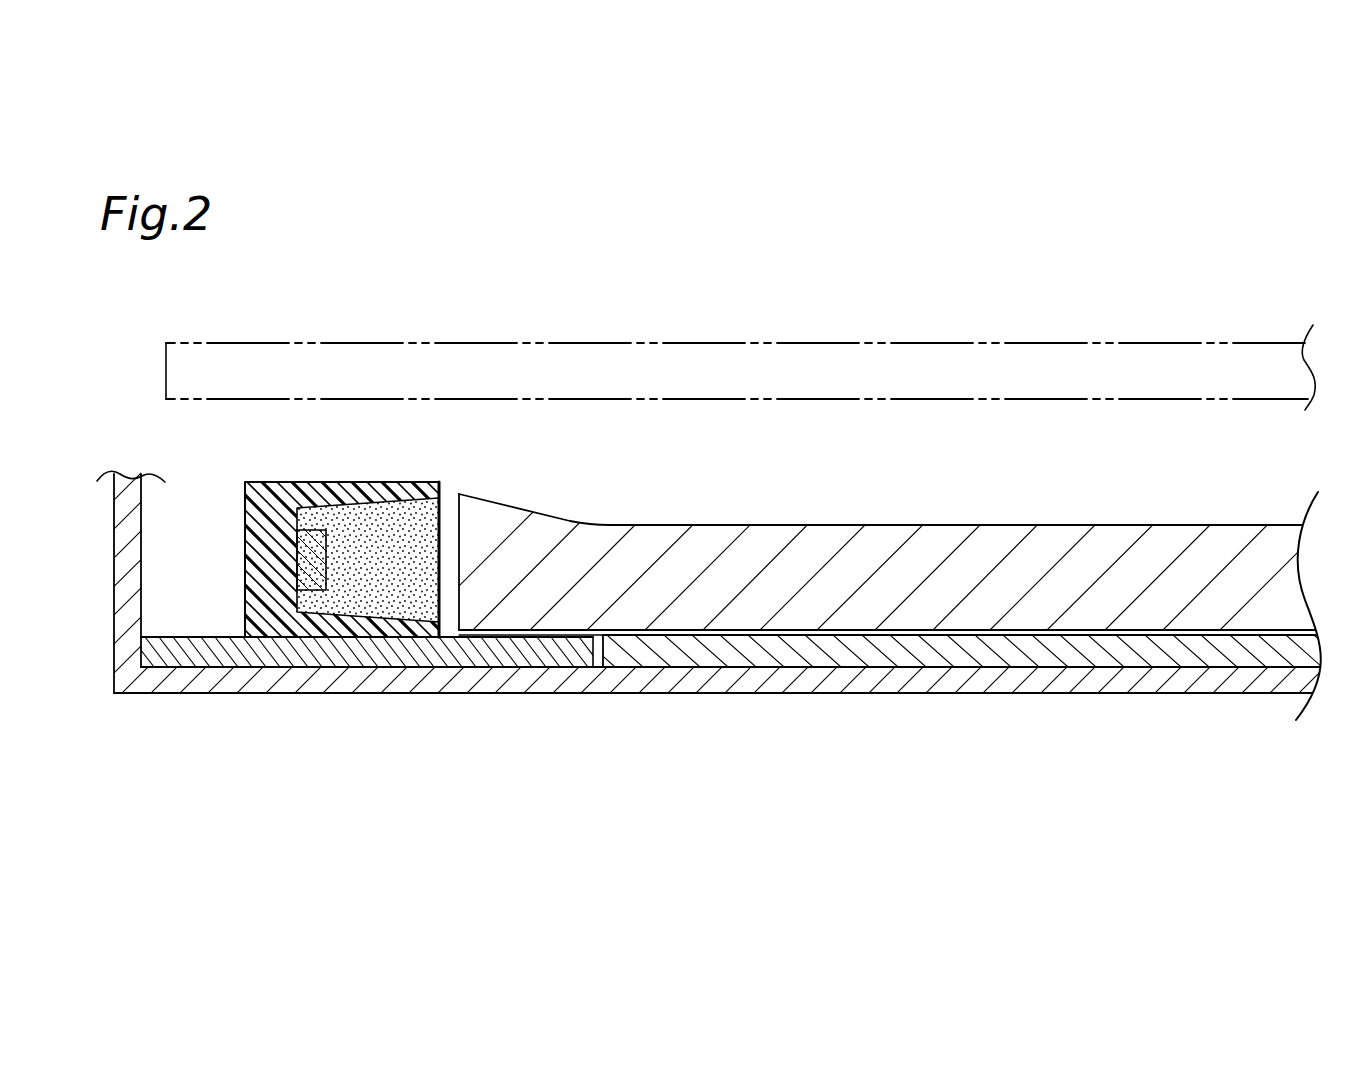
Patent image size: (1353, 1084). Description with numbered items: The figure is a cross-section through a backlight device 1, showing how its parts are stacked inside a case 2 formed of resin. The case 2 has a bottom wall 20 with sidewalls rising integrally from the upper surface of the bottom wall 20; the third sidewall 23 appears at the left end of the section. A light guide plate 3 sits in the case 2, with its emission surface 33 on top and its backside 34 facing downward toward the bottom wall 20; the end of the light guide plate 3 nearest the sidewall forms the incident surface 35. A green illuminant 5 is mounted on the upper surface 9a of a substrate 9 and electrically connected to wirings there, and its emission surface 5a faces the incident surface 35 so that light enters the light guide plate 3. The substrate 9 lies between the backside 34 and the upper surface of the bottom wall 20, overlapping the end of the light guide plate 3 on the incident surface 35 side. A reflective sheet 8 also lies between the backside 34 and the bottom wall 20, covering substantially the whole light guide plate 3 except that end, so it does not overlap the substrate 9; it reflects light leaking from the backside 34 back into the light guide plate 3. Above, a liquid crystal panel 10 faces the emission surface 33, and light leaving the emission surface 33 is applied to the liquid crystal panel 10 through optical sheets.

The backlight device 1 is at (1291, 461).
The case 2 is at (676, 632).
The light guide plate 3 is at (881, 523).
The green illuminant 5 is at (357, 569).
The emission surface of the green illuminant 5a is at (439, 560).
The reflective sheet 8 is at (757, 653).
The substrate 9 is at (366, 667).
The upper surface of the substrate 9a is at (195, 637).
The liquid crystal panel 10 is at (797, 340).
The bottom wall 20 is at (1015, 693).
The third sidewall 23 is at (125, 555).
The emission surface 33 is at (1072, 523).
The backside 34 is at (1087, 633).
The incident surface 35 is at (459, 542).